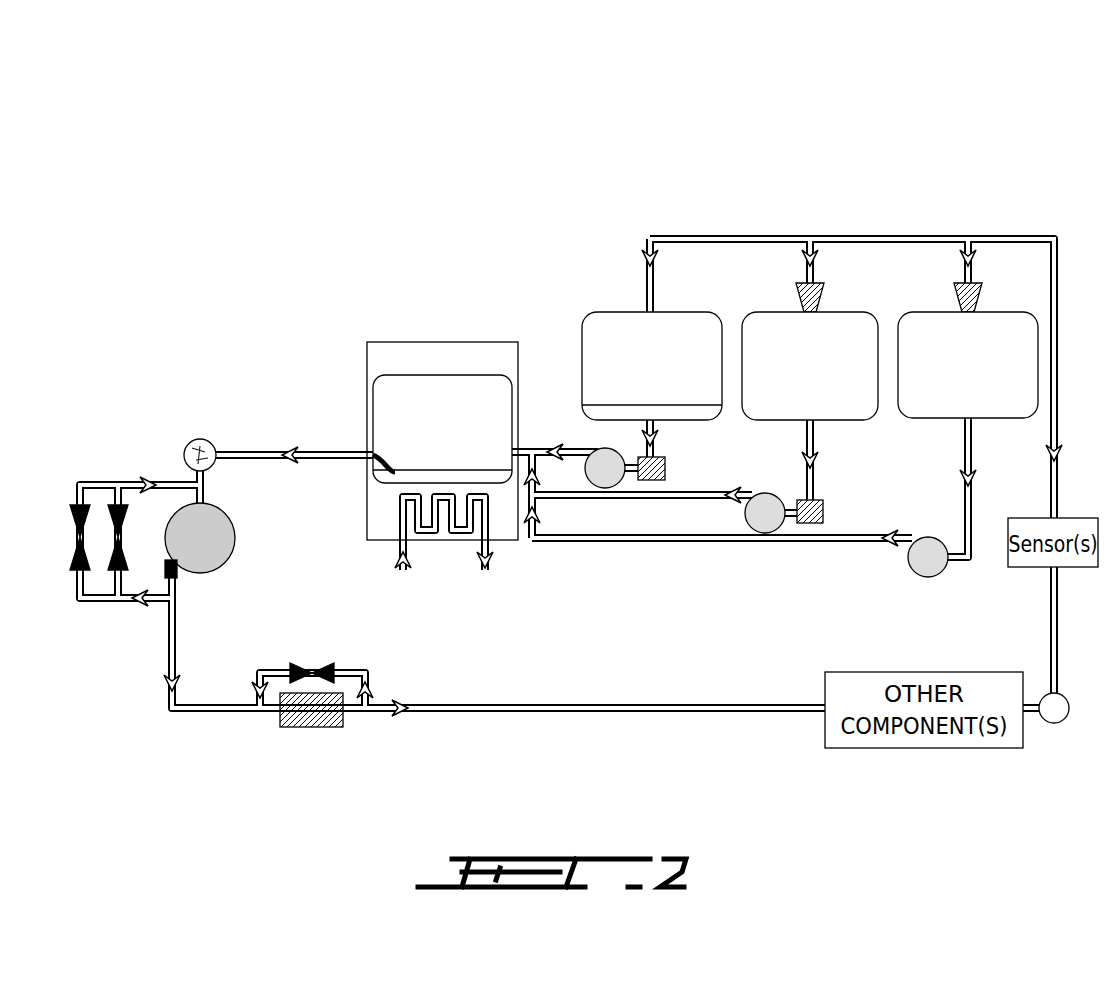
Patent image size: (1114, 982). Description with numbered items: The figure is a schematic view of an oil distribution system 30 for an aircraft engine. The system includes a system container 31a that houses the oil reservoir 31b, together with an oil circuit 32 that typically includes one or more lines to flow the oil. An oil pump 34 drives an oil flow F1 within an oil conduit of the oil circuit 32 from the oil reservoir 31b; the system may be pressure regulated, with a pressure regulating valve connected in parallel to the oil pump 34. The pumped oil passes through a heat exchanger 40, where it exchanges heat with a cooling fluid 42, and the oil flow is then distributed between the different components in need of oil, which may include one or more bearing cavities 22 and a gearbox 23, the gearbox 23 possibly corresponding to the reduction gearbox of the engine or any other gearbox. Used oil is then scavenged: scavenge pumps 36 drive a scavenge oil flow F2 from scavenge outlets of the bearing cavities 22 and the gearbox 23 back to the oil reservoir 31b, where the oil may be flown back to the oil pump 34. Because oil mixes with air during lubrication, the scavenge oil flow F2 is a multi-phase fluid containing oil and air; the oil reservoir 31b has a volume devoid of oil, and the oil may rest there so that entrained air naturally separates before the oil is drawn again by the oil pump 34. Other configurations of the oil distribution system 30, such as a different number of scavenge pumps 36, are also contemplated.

The oil distribution system 30 is at (852, 197).
The bearing cavity 22 is at (845, 312).
The gearbox 23 is at (612, 312).
The system container 31a is at (495, 342).
The oil reservoir 31b is at (442, 375).
The oil circuit 32 is at (210, 713).
The oil pump 34 is at (208, 556).
The scavenge pump 36 is at (600, 455).
The heat exchanger 40 is at (424, 425).
The cooling fluid 42 is at (492, 544).
The oil flow F1 is at (232, 695).
The scavenge oil flow F2 is at (578, 527).